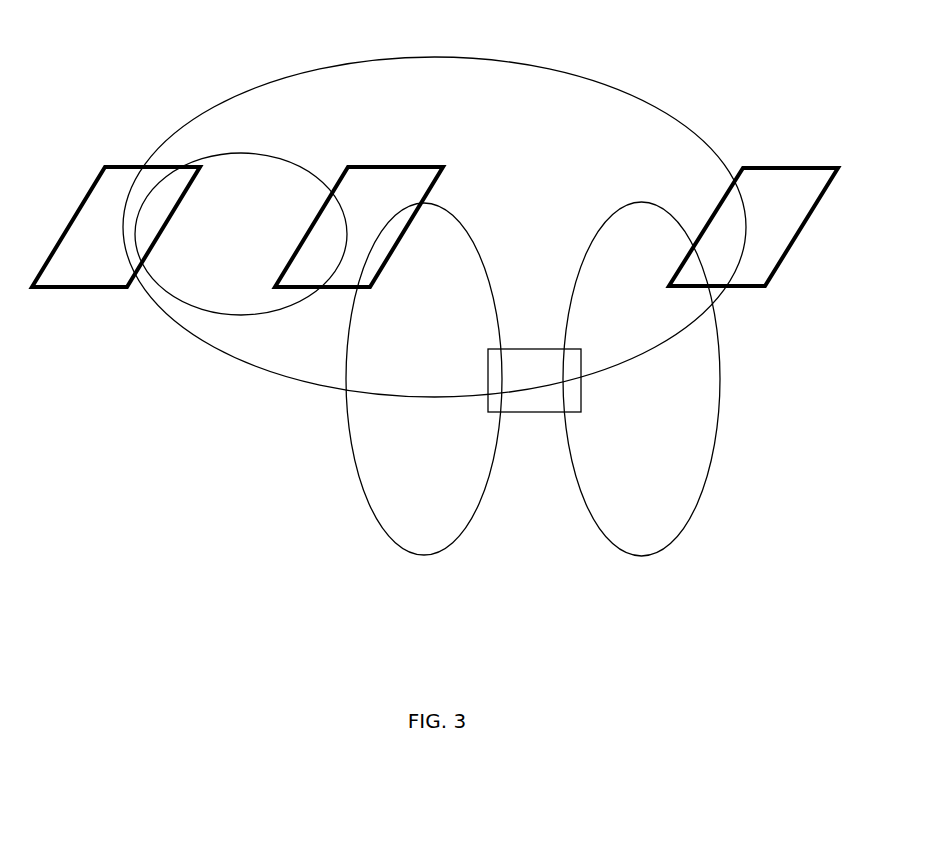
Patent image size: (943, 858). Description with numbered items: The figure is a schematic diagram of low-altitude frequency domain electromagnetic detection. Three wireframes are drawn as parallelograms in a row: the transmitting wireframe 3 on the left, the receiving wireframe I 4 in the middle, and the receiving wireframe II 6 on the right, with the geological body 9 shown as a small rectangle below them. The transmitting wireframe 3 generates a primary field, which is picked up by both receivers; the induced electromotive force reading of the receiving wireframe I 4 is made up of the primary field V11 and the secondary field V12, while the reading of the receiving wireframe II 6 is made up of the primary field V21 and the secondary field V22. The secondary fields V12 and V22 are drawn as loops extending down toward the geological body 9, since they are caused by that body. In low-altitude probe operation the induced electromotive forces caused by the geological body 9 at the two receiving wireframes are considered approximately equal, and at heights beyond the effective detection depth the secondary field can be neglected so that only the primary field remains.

The transmitting wireframe 3 is at (116, 153).
The receiving wireframe I 4 is at (377, 151).
The receiving wireframe II 6 is at (753, 163).
The geological body 9 is at (534, 448).
The primary field V11 is at (241, 234).
The secondary field V12 is at (424, 379).
The primary field V21 is at (434, 227).
The secondary field V22 is at (663, 379).